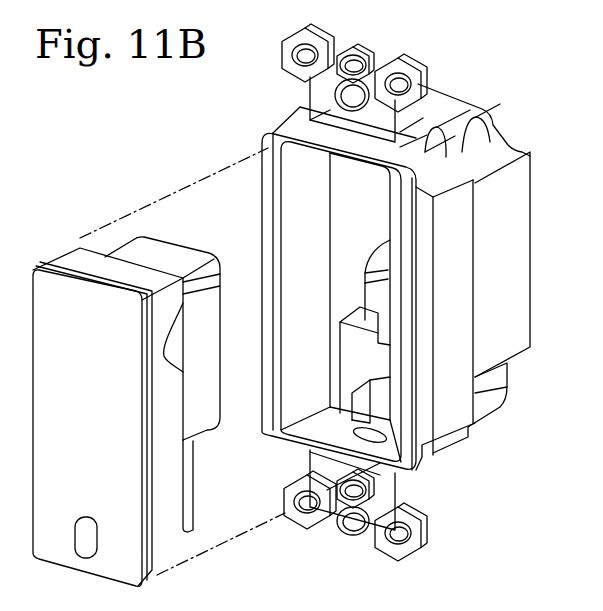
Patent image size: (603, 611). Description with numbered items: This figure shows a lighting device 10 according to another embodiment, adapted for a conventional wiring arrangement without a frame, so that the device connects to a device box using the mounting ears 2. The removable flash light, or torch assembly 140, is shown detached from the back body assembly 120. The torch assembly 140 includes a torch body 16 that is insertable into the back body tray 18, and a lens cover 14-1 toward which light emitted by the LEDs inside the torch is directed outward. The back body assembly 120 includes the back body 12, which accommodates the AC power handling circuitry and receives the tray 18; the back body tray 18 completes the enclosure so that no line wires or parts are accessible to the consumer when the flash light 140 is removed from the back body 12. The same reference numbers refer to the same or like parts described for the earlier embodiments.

The lighting device 10 is at (90, 118).
The torch assembly 140 is at (39, 226).
The lens cover 14-1 is at (110, 431).
The torch body 16 is at (215, 393).
The back body tray 18 is at (376, 221).
The back body 12 is at (518, 289).
The mounting ears 2 is at (396, 70).
The back body assembly 120 is at (501, 479).